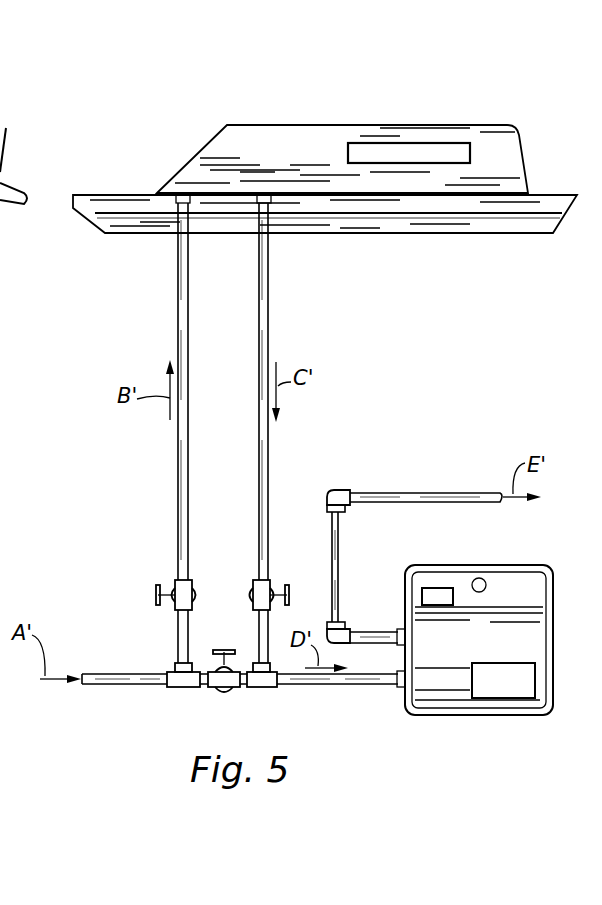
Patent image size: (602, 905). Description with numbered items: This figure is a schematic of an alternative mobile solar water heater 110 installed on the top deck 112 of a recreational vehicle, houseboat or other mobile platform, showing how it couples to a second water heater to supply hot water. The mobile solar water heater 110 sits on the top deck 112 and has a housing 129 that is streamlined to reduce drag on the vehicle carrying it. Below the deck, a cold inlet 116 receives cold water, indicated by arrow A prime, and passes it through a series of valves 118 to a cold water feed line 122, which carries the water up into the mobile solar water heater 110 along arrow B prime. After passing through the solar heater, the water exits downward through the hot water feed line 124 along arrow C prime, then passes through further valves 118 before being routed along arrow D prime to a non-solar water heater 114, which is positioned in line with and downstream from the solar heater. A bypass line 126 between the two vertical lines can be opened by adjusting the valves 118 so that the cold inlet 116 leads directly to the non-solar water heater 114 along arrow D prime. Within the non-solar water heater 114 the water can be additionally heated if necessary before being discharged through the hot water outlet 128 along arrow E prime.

The mobile solar water heater 110 is at (400, 90).
The top deck 112 is at (345, 226).
The non-solar water heater 114 is at (478, 652).
The cold inlet 116 is at (145, 685).
The valves 118 is at (175, 585).
The cold water feed line 122 is at (178, 515).
The hot water feed line 124 is at (268, 477).
The bypass line 126 is at (206, 690).
The hot water outlet 128 is at (432, 492).
The housing 129 is at (275, 140).